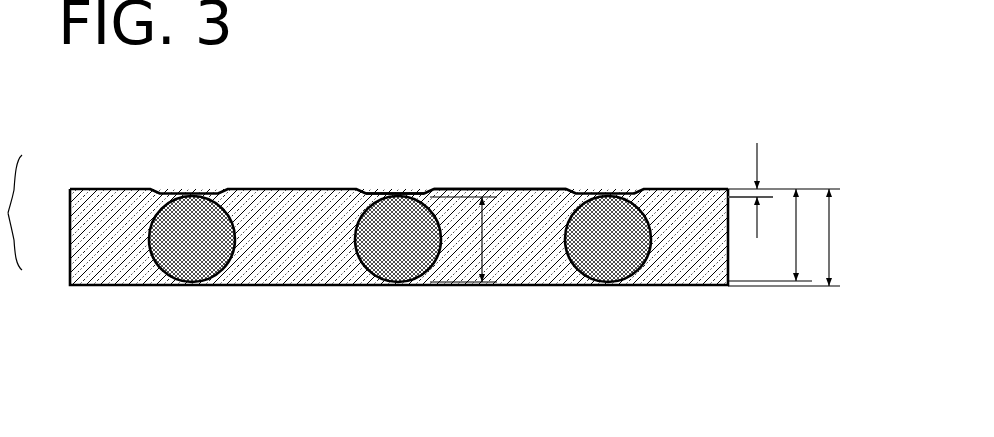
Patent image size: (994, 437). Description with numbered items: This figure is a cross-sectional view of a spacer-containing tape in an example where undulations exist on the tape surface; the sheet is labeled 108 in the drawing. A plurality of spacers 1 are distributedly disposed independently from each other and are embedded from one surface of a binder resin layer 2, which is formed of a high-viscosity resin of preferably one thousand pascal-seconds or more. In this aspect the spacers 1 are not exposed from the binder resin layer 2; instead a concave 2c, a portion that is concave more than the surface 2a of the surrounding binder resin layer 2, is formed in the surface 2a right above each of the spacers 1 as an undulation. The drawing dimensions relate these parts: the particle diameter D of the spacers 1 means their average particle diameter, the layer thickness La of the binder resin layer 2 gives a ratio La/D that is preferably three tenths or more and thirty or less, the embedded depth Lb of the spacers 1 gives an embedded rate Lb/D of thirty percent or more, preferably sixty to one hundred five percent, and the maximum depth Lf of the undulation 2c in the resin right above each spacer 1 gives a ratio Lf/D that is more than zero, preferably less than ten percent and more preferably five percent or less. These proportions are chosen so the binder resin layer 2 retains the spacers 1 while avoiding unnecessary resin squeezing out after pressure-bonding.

The spacer 1 is at (150, 228).
The binder resin layer 2 is at (80, 252).
The surface of the binder resin layer 2a is at (513, 190).
The concave (undulation) 2c is at (417, 191).
The composite sheet 108 is at (115, 370).
The particle diameter D is at (492, 245).
The maximum depth of the undulation Lf is at (784, 181).
The embedded depth of the spacer Lb is at (796, 213).
The layer thickness of the binder resin layer La is at (829, 253).